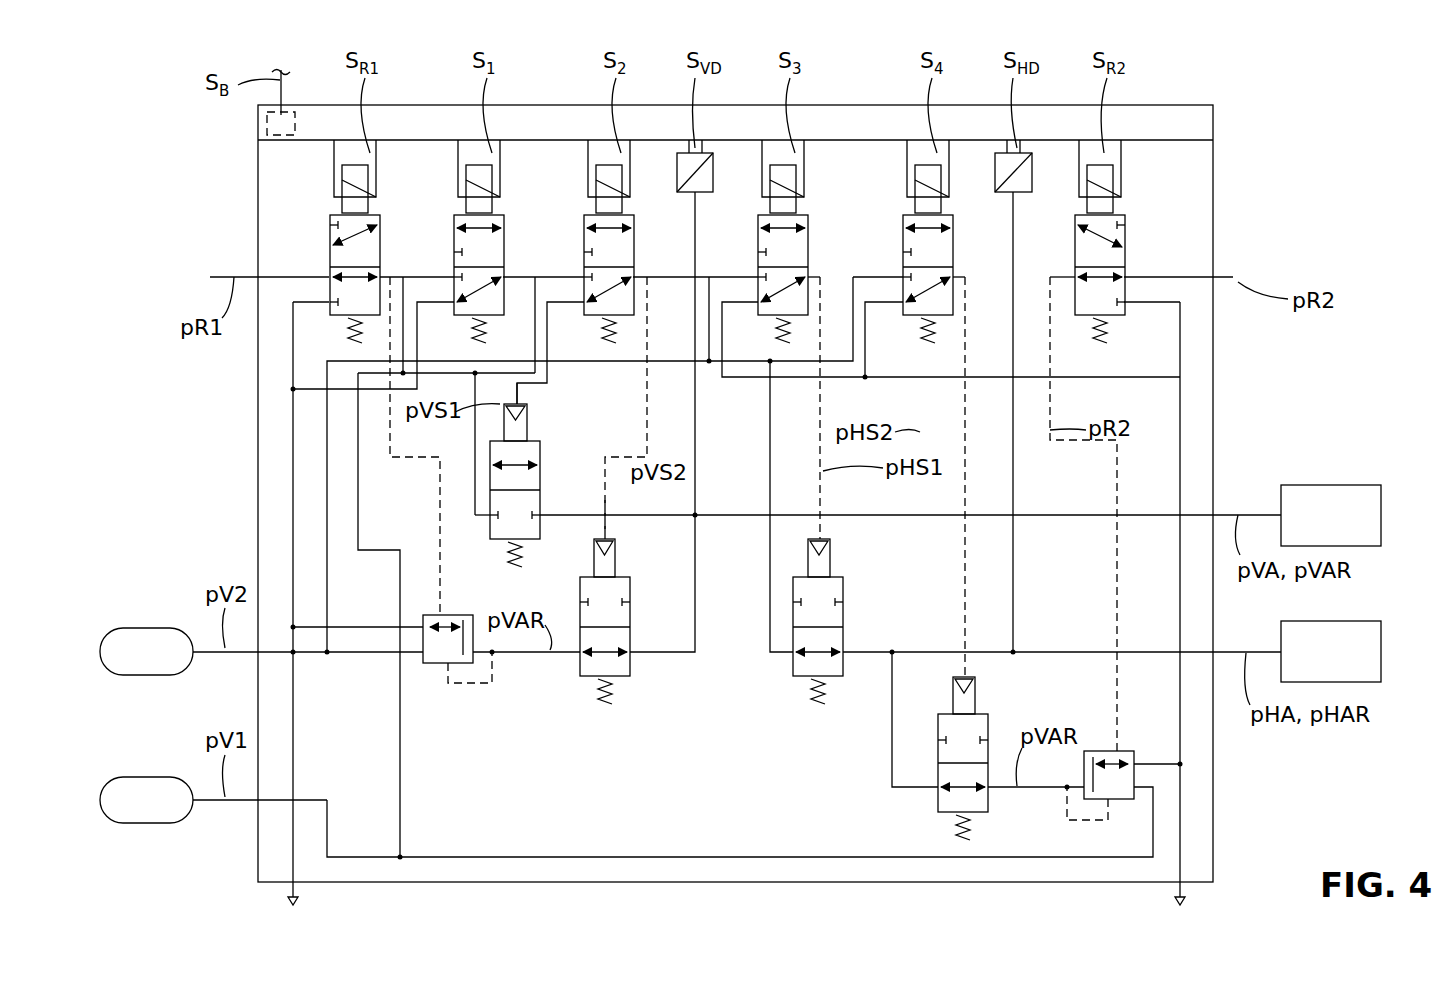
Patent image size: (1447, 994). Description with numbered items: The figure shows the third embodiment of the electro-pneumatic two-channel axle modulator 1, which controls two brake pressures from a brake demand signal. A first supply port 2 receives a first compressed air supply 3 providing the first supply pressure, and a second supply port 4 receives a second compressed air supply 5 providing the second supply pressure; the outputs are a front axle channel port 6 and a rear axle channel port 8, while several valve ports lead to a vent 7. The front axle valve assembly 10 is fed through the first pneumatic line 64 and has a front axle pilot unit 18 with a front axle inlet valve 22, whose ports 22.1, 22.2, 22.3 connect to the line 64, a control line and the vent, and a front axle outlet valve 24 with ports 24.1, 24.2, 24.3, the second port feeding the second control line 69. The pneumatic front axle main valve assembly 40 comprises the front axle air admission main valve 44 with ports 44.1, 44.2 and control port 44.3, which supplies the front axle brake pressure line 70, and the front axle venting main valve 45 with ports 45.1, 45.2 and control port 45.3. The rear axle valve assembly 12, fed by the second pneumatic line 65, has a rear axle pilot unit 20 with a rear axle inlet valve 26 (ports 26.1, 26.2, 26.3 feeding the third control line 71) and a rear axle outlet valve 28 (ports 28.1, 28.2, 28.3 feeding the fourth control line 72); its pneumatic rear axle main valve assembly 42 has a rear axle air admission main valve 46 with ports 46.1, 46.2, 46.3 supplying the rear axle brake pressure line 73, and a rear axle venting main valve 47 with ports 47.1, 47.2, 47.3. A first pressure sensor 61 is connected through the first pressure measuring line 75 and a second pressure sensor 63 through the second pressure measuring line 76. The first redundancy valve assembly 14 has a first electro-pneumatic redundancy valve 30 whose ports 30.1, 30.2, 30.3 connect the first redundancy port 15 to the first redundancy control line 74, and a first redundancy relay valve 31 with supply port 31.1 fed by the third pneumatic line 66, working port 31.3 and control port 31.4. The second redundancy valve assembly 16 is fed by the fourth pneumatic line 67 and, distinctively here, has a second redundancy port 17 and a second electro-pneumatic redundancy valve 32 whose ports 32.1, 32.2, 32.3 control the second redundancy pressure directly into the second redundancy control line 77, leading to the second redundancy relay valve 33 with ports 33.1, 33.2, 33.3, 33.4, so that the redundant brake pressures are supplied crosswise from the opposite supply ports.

The electro-pneumatic two-channel axle modulator 1 is at (185, 175).
The first supply port 2 is at (252, 802).
The first compressed air supply 3 is at (133, 823).
The second supply port 4 is at (258, 653).
The second compressed air supply 5 is at (157, 627).
The front axle channel port 6 is at (1218, 515).
The vent 7 is at (298, 902).
The rear axle channel port 8 is at (1218, 652).
The front axle valve assembly 10 is at (532, 155).
The rear axle valve assembly 12 is at (865, 160).
The first redundancy valve assembly 14 is at (513, 683).
The first redundancy port 15 is at (258, 277).
The second redundancy valve assembly 16 is at (823, 769).
The second redundancy port 17 is at (1213, 277).
The front axle pilot unit 18 is at (550, 155).
The rear axle pilot unit 20 is at (828, 155).
The front axle inlet valve 22 is at (478, 248).
The first front axle inlet valve port 22.1 is at (452, 272).
The second front axle inlet valve port 22.2 is at (502, 244).
The third front axle inlet valve port 22.3 is at (454, 305).
The front axle outlet valve 24 is at (607, 248).
The first front axle outlet valve port 24.1 is at (580, 272).
The second front axle outlet valve port 24.2 is at (633, 244).
The third front axle outlet valve port 24.3 is at (584, 305).
The rear axle inlet valve 26 is at (784, 248).
The first rear axle inlet valve port 26.1 is at (758, 270).
The second rear axle inlet valve port 26.2 is at (805, 245).
The third rear axle inlet valve port 26.3 is at (759, 305).
The rear axle outlet valve 28 is at (922, 248).
The first rear axle outlet valve port 28.1 is at (901, 272).
The second rear axle outlet valve port 28.2 is at (950, 245).
The third rear axle outlet valve port 28.3 is at (901, 305).
The first electro-pneumatic redundancy valve 30 is at (355, 248).
The first redundancy valve port 30.1 is at (330, 277).
The second redundancy valve port 30.2 is at (376, 244).
The third redundancy valve port 30.3 is at (328, 305).
The first redundancy relay valve 31 is at (402, 670).
The first redundancy relay valve supply port 31.1 is at (430, 664).
The first redundancy relay valve working port 31.3 is at (486, 664).
The first redundancy relay valve control port 31.4 is at (442, 613).
The second electro-pneumatic redundancy valve 32 is at (1103, 248).
The fourth redundancy valve port 32.1 is at (1075, 277).
The fifth redundancy valve port 32.2 is at (1125, 277).
The sixth redundancy valve port 32.3 is at (1124, 305).
The second redundancy relay valve 33 is at (1171, 799).
The second redundancy relay valve supply port 33.1 is at (1135, 792).
The second redundancy relay valve venting port 33.2 is at (1140, 767).
The second redundancy relay valve working port 33.3 is at (1095, 800).
The second redundancy relay valve control port 33.4 is at (1121, 750).
The pneumatic front axle main valve assembly 40 is at (541, 478).
The pneumatic rear axle main valve assembly 42 is at (812, 655).
The front axle air admission main valve 44 is at (525, 478).
The first front axle air admission port 44.1 is at (490, 518).
The second front axle air admission port 44.2 is at (540, 512).
The front axle air admission control port 44.3 is at (520, 403).
The front axle venting main valve 45 is at (613, 603).
The first front axle venting port 45.1 is at (580, 655).
The second front axle venting port 45.2 is at (632, 656).
The front axle venting control port 45.3 is at (610, 537).
The rear axle air admission main valve 46 is at (823, 616).
The first rear axle air admission port 46.1 is at (792, 655).
The second rear axle air admission port 46.2 is at (848, 648).
The rear axle air admission control port 46.3 is at (823, 548).
The rear axle venting main valve 47 is at (967, 754).
The first rear axle venting port 47.1 is at (990, 790).
The second rear axle venting port 47.2 is at (937, 790).
The rear axle venting control port 47.3 is at (972, 685).
The first pressure sensor 61 is at (713, 172).
The second pressure sensor 63 is at (995, 178).
The first pneumatic line 64 is at (358, 515).
The second pneumatic line 65 is at (327, 595).
The third pneumatic line 66 is at (350, 656).
The fourth pneumatic line 67 is at (460, 856).
The second control line 69 is at (650, 380).
The front axle brake pressure line 70 is at (695, 533).
The third control line 71 is at (822, 408).
The fourth control line 72 is at (965, 493).
The rear axle brake pressure line 73 is at (940, 655).
The first redundancy control line 74 is at (390, 429).
The first pressure measuring line 75 is at (700, 410).
The second pressure measuring line 76 is at (1013, 489).
The second redundancy control line 77 is at (1050, 398).